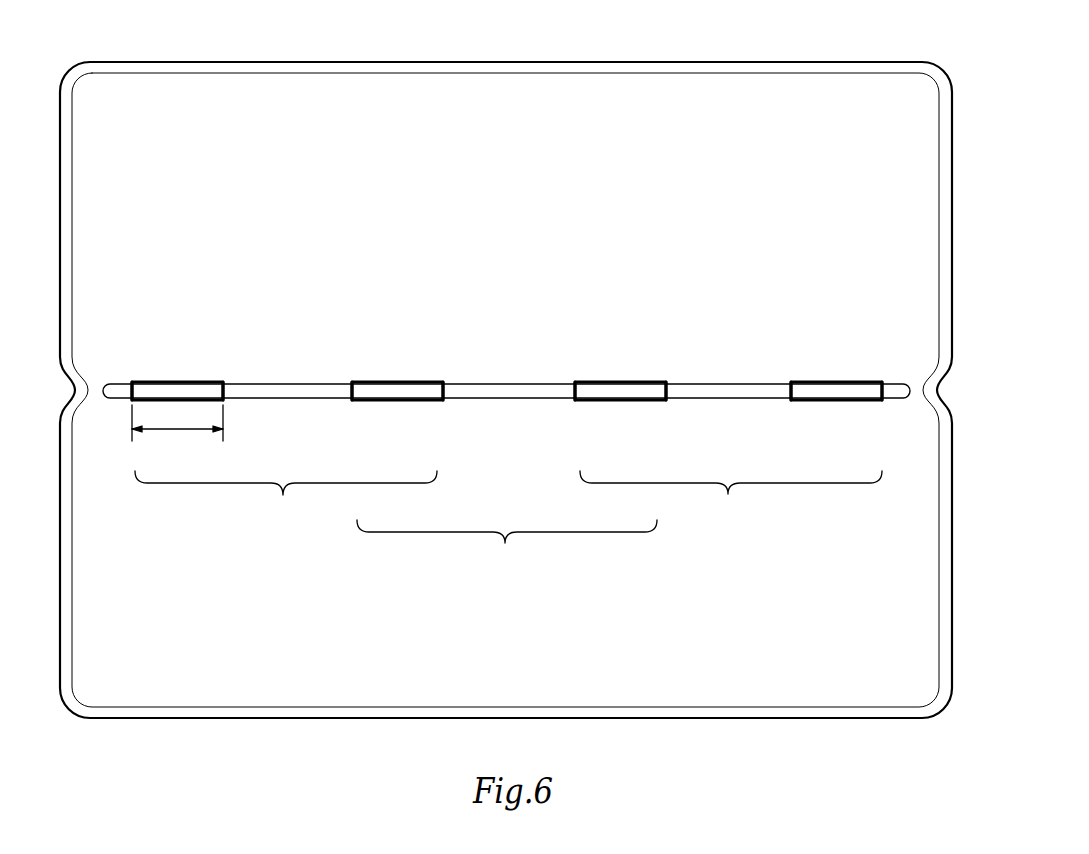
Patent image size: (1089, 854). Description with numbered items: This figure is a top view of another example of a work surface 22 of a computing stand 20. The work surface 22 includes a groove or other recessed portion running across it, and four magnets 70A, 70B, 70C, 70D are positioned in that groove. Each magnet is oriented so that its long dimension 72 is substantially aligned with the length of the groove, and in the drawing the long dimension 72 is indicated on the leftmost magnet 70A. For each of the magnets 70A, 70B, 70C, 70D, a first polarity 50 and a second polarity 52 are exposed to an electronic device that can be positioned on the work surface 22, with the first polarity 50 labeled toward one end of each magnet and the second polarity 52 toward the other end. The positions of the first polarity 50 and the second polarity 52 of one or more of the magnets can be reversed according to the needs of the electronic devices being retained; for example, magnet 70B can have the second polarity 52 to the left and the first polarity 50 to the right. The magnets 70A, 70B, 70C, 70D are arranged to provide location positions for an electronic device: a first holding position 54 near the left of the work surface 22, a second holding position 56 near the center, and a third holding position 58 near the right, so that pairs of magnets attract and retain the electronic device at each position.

The computing stand 20 is at (1024, 72).
The work surface 22 is at (920, 177).
The first polarity 50 is at (143, 382).
The second polarity 52 is at (207, 382).
The first holding position 54 is at (286, 498).
The second holding position 56 is at (507, 548).
The third holding position 58 is at (731, 499).
The magnet 70A is at (168, 387).
The magnet 70B is at (388, 387).
The magnet 70C is at (611, 387).
The magnet 70D is at (827, 387).
The long dimension 72 is at (178, 430).